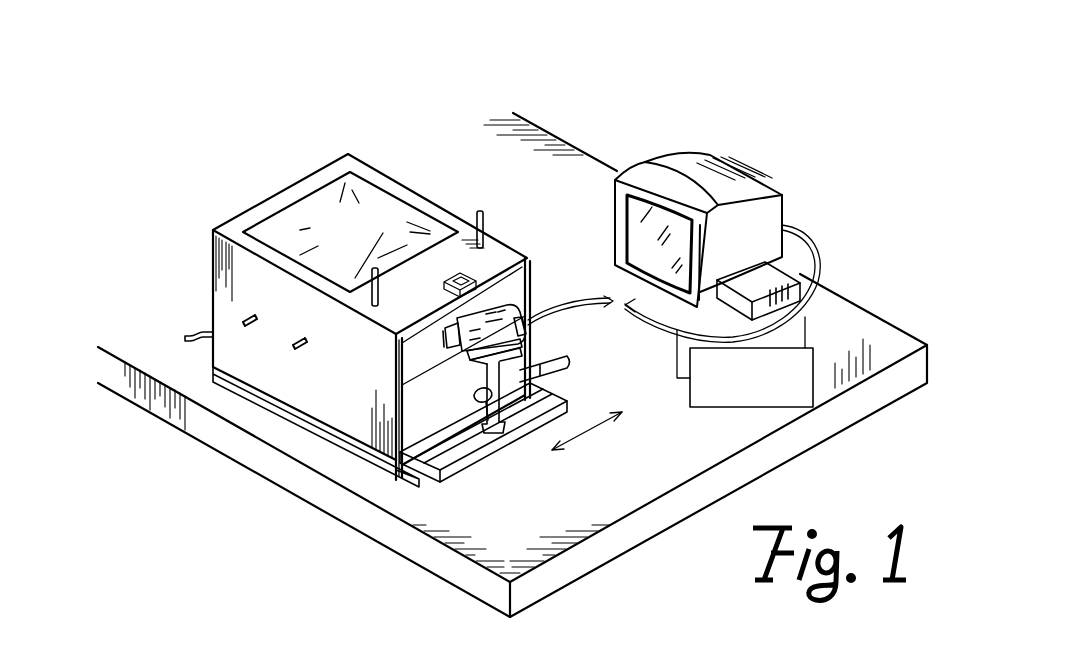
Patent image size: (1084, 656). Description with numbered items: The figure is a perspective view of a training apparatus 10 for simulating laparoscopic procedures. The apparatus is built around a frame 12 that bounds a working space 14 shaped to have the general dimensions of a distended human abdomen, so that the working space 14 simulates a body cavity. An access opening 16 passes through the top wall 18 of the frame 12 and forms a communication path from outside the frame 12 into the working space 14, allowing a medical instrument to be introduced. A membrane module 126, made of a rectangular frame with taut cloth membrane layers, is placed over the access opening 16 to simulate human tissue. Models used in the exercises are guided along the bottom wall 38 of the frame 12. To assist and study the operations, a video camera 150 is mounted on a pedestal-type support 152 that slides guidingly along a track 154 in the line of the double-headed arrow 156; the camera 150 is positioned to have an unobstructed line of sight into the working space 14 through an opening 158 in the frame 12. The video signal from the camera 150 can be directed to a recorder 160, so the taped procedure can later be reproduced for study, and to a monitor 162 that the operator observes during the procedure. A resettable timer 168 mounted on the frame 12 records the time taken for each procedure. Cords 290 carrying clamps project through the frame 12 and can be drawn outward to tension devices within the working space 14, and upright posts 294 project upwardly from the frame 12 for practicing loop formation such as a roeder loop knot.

The training apparatus 10 is at (855, 284).
The frame 12 is at (402, 182).
The working space 14 is at (305, 390).
The access opening 16 is at (263, 242).
The top wall 18 is at (508, 256).
The bottom wall 38 is at (414, 356).
The membrane module 126 is at (362, 175).
The video camera 150 is at (530, 328).
The pedestal-type support 152 is at (504, 431).
The track 154 is at (460, 481).
The double-headed arrow 156 is at (590, 430).
The opening 158 is at (393, 354).
The recorder 160 is at (770, 402).
The monitor 162 is at (660, 180).
The timer 168 is at (470, 271).
The cords 290 is at (266, 382).
The upright posts 294 is at (373, 270).